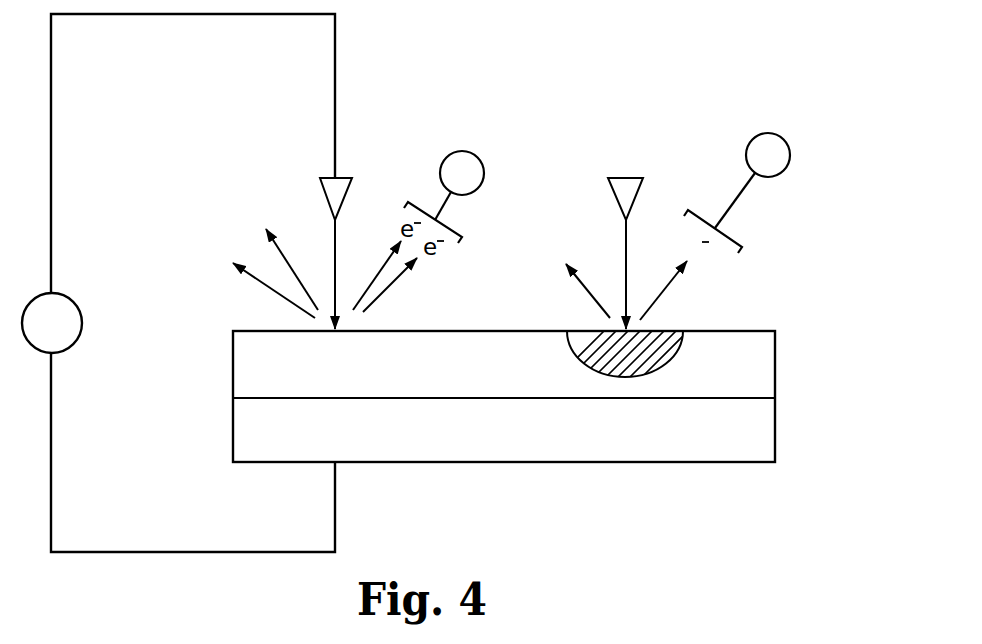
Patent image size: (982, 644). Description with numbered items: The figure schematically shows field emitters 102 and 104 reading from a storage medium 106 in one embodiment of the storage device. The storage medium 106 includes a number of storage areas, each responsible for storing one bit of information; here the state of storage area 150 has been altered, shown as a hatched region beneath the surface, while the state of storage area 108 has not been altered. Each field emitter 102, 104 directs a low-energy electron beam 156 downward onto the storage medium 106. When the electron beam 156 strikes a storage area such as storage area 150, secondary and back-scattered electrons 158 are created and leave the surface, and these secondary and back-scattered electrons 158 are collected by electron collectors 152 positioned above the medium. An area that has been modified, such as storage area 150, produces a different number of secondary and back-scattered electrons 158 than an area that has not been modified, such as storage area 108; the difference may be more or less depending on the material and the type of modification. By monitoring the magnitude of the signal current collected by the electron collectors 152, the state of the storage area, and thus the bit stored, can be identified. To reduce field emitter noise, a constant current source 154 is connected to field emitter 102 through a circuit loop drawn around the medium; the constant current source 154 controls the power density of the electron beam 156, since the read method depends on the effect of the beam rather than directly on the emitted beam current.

The field emitter 102 is at (343, 185).
The field emitter 104 is at (627, 190).
The storage medium 106 is at (785, 394).
The storage area 108 is at (380, 326).
The storage area 150 is at (674, 322).
The electron collectors 152 is at (498, 133).
The constant current source 154 is at (74, 302).
The electron beam 156 is at (335, 243).
The secondary and back-scattered electrons 158 is at (588, 292).